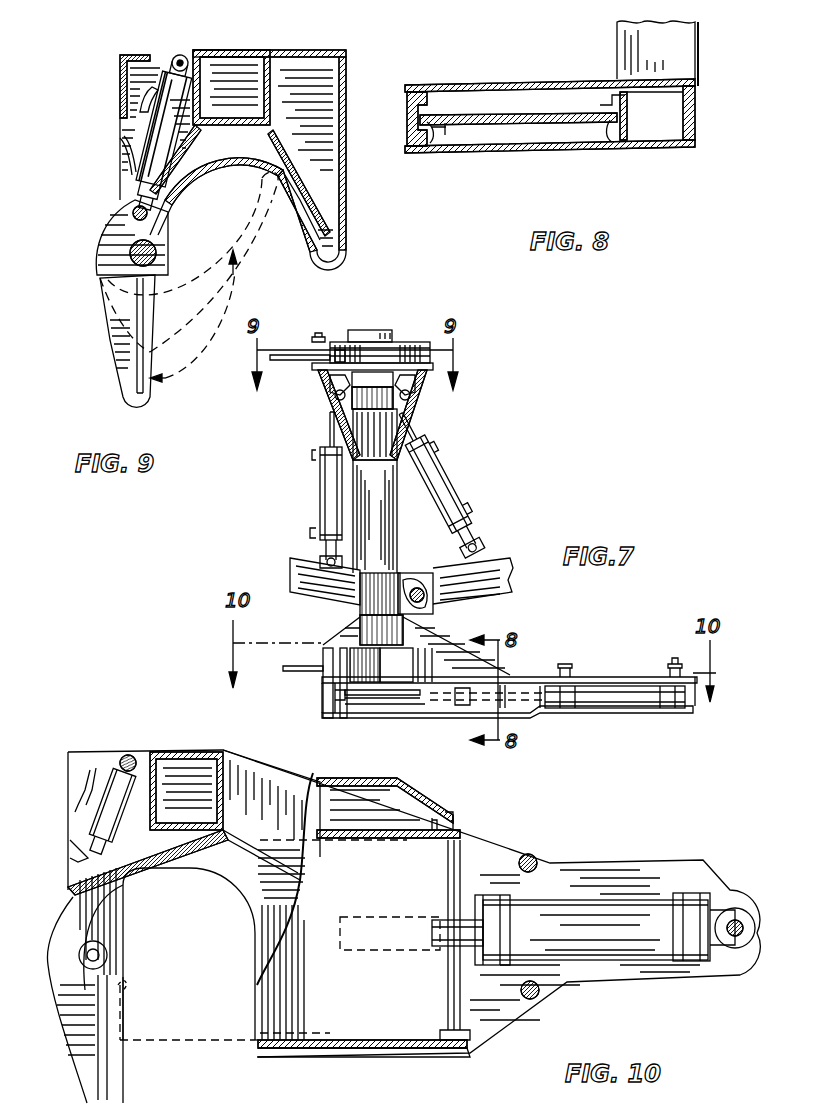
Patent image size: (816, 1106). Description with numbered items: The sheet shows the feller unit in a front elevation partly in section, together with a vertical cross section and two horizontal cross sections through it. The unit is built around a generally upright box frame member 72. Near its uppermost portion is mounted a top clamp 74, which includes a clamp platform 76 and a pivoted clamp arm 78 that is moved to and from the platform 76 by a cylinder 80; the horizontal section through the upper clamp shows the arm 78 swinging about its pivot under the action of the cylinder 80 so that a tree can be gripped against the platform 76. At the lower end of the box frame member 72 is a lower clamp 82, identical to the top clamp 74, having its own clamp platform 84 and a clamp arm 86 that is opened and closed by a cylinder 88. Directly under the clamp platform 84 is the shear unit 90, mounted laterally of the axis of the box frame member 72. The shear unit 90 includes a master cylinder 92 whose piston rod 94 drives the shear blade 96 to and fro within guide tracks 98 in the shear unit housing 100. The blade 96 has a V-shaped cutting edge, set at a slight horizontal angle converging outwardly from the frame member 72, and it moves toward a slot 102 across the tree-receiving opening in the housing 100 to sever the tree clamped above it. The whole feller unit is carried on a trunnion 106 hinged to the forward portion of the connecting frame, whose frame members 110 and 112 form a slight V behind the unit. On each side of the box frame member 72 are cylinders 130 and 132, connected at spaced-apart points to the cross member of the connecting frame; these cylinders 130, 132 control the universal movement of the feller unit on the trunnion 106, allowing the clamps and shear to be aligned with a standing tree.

In FIG. 9, the box frame member 72 is at (273, 72).
In FIG. 8, the box frame member 72 is at (628, 57).
In FIG. 7, the box frame member 72 is at (398, 546).
In FIG. 10, the box frame member 72 is at (180, 750).
In FIG. 9, the top clamp 74 is at (348, 197).
In FIG. 7, the top clamp 74 is at (398, 342).
In FIG. 9, the clamp platform 76 is at (283, 178).
In FIG. 7, the clamp platform 76 is at (420, 378).
In FIG. 9, the pivoted clamp arm 78 is at (118, 374).
In FIG. 7, the pivoted clamp arm 78 is at (297, 365).
In FIG. 9, the cylinder 80 is at (157, 124).
In FIG. 7, the lower clamp 82 is at (328, 648).
In FIG. 10, the lower clamp 82 is at (72, 860).
In FIG. 10, the clamp platform 84 is at (222, 870).
In FIG. 10, the clamp arm 86 is at (63, 1002).
In FIG. 10, the cylinder 88 is at (80, 822).
In FIG. 7, the shear unit 90 is at (466, 718).
In FIG. 10, the shear unit 90 is at (450, 1055).
In FIG. 7, the master cylinder 92 is at (623, 712).
In FIG. 10, the master cylinder 92 is at (607, 950).
In FIG. 10, the piston rod 94 is at (437, 948).
In FIG. 8, the shear blade 96 is at (500, 130).
In FIG. 7, the shear blade 96 is at (389, 712).
In FIG. 10, the shear blade 96 is at (188, 1045).
In FIG. 8, the guide tracks 98 is at (433, 143).
In FIG. 8, the shear unit housing 100 is at (540, 148).
In FIG. 10, the shear unit housing 100 is at (356, 1055).
In FIG. 7, the slot 102 is at (347, 712).
In FIG. 10, the slot 102 is at (118, 985).
In FIG. 7, the trunnion 106 is at (428, 600).
In FIG. 7, the frame member 110 is at (312, 588).
In FIG. 7, the frame member 112 is at (503, 590).
In FIG. 7, the cylinder 130 is at (322, 490).
In FIG. 7, the cylinder 132 is at (455, 486).